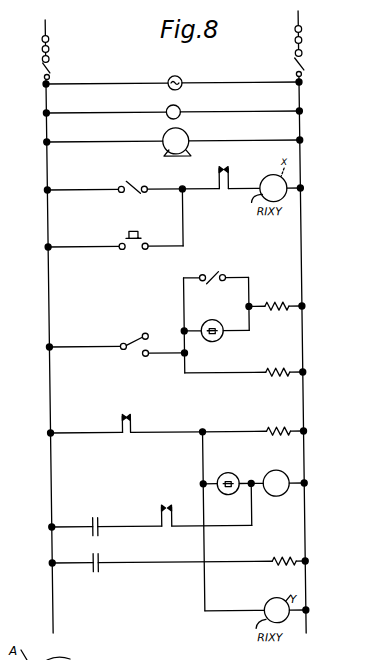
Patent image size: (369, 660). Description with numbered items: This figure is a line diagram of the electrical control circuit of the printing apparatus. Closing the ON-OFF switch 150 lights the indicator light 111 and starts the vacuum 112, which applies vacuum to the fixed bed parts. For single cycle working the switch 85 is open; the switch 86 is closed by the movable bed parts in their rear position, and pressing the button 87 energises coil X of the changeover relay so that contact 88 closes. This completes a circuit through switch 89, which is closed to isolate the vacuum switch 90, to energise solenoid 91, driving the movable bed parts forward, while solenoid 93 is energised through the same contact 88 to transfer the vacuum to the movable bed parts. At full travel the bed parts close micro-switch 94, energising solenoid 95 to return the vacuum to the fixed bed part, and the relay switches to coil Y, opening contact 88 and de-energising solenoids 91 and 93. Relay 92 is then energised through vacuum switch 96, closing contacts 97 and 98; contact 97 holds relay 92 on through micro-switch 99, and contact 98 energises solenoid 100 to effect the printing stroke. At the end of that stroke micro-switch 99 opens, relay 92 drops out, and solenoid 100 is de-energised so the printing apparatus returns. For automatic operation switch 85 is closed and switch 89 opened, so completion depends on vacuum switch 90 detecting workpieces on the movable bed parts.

The ON-OFF switch 150 is at (173, 53).
The indicator light 111 is at (177, 76).
The vacuum 112 is at (187, 106).
The switch 85 is at (132, 180).
The switch 86 is at (212, 177).
The button 87 is at (129, 236).
The contact 88 is at (149, 340).
The switch 89 is at (215, 270).
The vacuum switch 90 is at (216, 324).
The solenoid 91 is at (275, 295).
The relay 92 is at (278, 474).
The solenoid 93 is at (243, 363).
The micro-switch 94 is at (136, 421).
The solenoid 95 is at (252, 422).
The vacuum switch 96 is at (227, 474).
The contact 97 is at (96, 519).
The contact 98 is at (98, 556).
The micro-switch 99 is at (175, 513).
The solenoid 100 is at (288, 551).